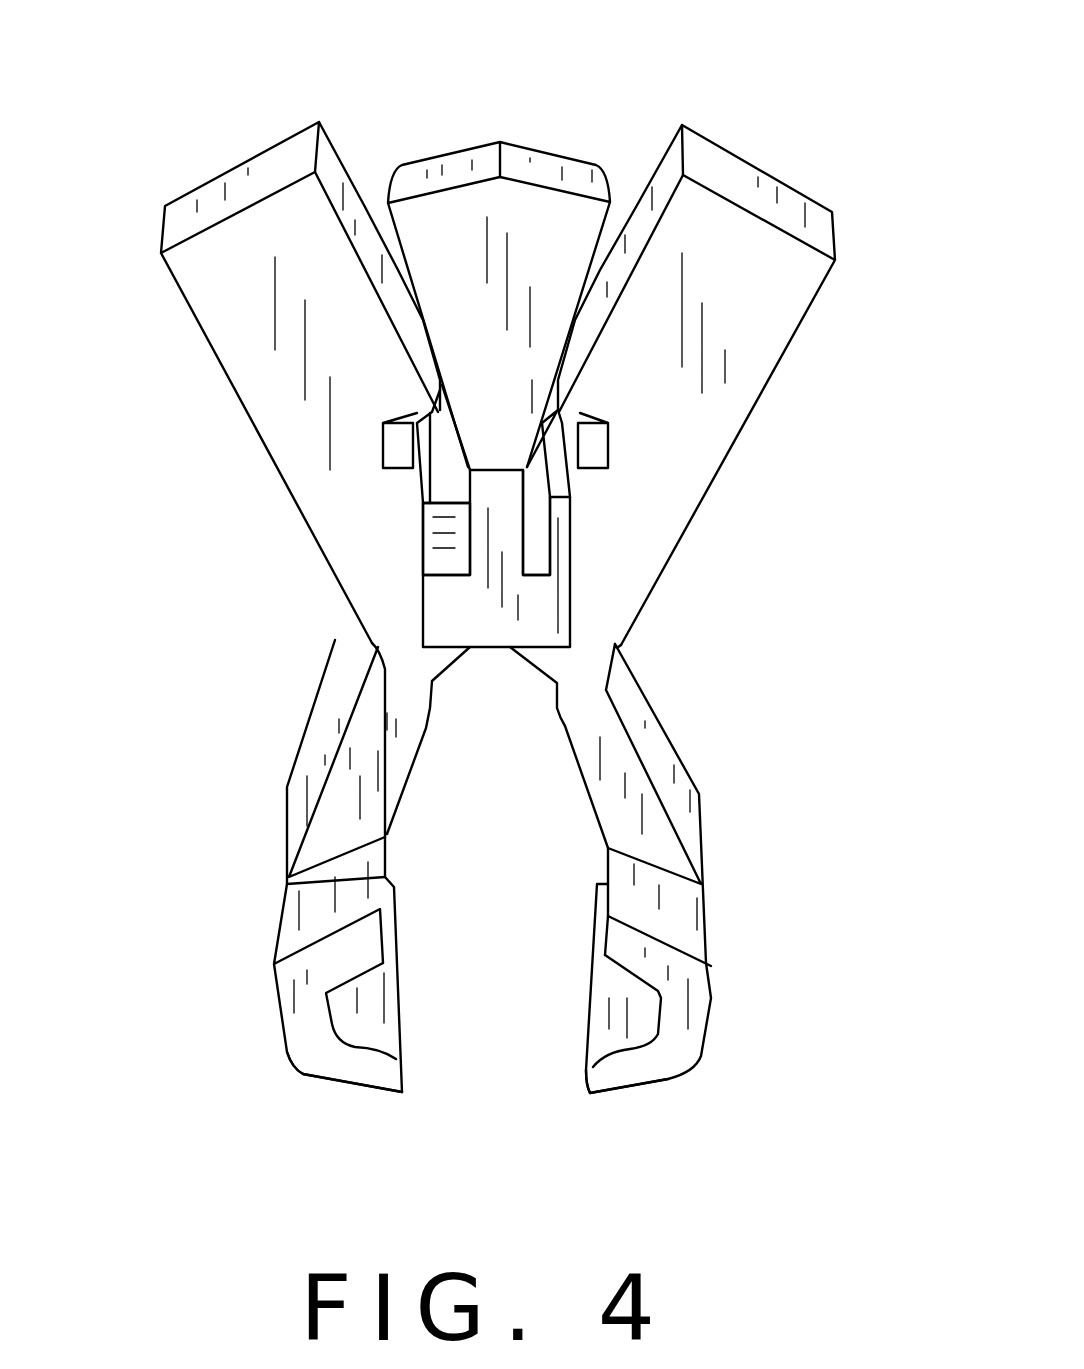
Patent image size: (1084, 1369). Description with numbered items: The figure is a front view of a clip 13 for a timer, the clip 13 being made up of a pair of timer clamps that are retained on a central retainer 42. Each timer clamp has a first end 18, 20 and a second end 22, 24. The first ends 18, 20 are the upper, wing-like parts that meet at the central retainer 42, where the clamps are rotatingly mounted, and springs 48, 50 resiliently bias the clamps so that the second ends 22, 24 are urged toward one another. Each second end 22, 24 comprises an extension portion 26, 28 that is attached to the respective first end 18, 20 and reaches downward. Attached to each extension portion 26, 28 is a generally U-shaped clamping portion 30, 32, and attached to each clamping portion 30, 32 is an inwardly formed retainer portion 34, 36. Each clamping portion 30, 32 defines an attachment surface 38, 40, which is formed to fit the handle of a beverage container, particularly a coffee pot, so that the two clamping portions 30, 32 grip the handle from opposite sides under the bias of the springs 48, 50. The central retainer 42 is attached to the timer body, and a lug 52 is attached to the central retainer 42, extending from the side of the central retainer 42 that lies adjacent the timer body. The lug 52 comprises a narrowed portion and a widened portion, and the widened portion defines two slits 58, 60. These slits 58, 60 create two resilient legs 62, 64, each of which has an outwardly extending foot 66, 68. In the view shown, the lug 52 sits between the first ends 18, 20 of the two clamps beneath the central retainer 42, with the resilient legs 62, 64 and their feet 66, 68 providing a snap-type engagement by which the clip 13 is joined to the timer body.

The clip 13 is at (808, 130).
The first end 18 is at (230, 168).
The first end 20 is at (737, 158).
The second end 22 is at (403, 1068).
The second end 24 is at (583, 1068).
The extension portion 26 is at (274, 780).
The extension portion 28 is at (632, 640).
The clamping portion 30 is at (258, 963).
The clamping portion 32 is at (707, 1070).
The retainer portion 34 is at (293, 1082).
The retainer portion 36 is at (583, 1097).
The attachment surface 38 is at (332, 1016).
The attachment surface 40 is at (654, 1018).
The central retainer 42 is at (503, 141).
The spring 48 is at (365, 207).
The spring 50 is at (636, 212).
The lug 52 is at (572, 573).
The slit 58 is at (467, 423).
The slit 60 is at (545, 405).
The resilient leg 62 is at (422, 520).
The resilient leg 64 is at (573, 523).
The foot 66 is at (417, 422).
The foot 68 is at (607, 420).